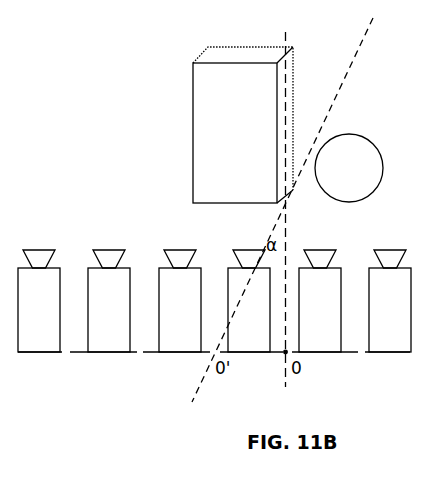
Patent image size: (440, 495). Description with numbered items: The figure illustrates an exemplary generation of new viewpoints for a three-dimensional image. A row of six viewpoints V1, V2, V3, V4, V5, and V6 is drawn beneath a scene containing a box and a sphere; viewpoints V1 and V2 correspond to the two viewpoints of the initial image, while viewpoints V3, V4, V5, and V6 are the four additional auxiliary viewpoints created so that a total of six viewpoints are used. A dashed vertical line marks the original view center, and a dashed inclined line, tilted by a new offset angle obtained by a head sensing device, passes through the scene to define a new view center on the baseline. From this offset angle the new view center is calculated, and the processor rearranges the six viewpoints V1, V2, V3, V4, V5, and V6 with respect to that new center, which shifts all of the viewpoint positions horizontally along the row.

The viewpoint V1 is at (39, 301).
The viewpoint V2 is at (109, 301).
The viewpoint V3 is at (180, 301).
The viewpoint V4 is at (249, 301).
The viewpoint V5 is at (320, 301).
The viewpoint V6 is at (390, 301).